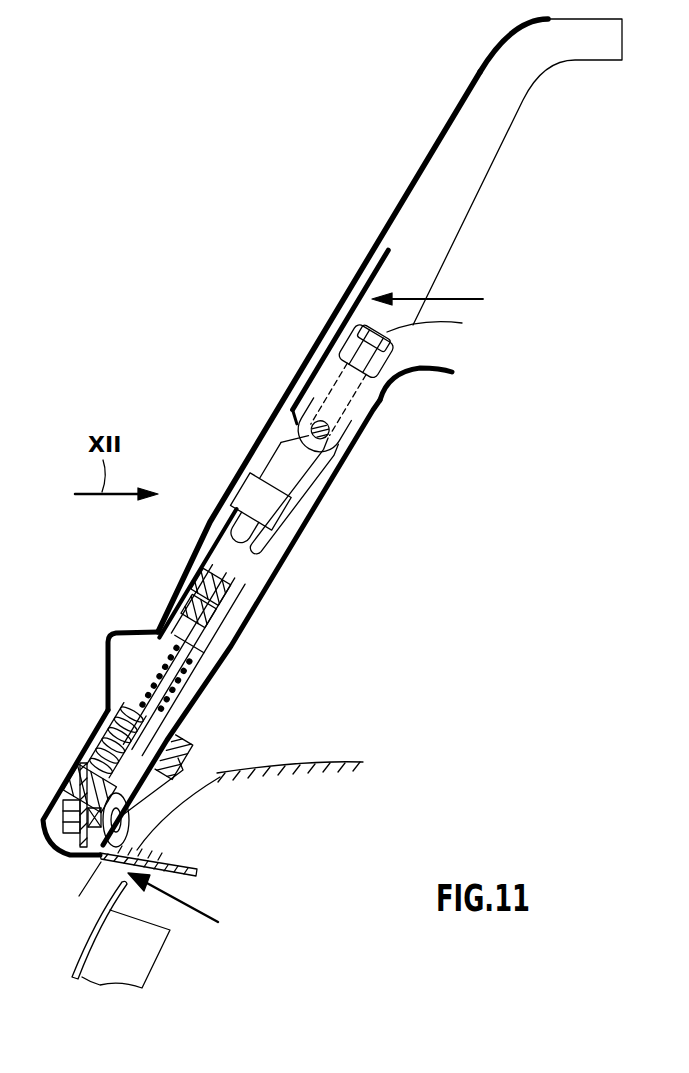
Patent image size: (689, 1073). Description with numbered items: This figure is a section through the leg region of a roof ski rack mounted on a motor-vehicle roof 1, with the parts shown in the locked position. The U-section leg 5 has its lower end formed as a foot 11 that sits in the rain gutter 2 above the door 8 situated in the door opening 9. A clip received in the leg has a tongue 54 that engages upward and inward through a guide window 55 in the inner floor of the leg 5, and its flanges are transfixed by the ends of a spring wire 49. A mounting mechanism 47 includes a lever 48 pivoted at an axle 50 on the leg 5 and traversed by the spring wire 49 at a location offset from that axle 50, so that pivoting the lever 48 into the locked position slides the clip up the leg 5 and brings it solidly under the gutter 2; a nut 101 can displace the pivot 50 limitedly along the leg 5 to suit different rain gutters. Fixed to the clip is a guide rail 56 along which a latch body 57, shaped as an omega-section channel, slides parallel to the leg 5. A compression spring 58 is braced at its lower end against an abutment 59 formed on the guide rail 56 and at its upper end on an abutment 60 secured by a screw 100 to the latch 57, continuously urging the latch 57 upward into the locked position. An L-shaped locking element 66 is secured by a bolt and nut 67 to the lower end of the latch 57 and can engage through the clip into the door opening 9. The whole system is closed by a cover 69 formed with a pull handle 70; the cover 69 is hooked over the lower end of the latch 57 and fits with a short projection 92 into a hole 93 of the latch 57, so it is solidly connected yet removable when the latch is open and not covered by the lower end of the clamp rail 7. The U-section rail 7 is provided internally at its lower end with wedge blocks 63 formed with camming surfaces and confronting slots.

The motor-vehicle roof 1 is at (327, 766).
The rain gutter 2 is at (80, 886).
The leg 5 is at (378, 410).
The clamp rail 7 is at (490, 150).
The door 8 is at (135, 963).
The door opening 9 is at (181, 903).
The foot 11 is at (150, 800).
The mounting mechanism 47 is at (443, 300).
The lever 48 is at (385, 250).
The spring wire 49 is at (292, 512).
The axle 50 is at (330, 438).
The tongue 54 is at (188, 753).
The guide window 55 is at (167, 773).
The guide rail 56 is at (207, 660).
The latch body 57 is at (120, 680).
The compression spring 58 is at (125, 700).
The abutment 59 is at (110, 740).
The abutment 60 is at (173, 618).
The wedge block 63 is at (272, 445).
The L-shaped locking element 66 is at (197, 872).
The bolt and nut 67 is at (48, 812).
The cover 69 is at (48, 840).
The pull handle 70 is at (125, 640).
The projection 92 is at (240, 580).
The hole 93 is at (217, 565).
The screw 100 is at (173, 617).
The nut 101 is at (402, 351).